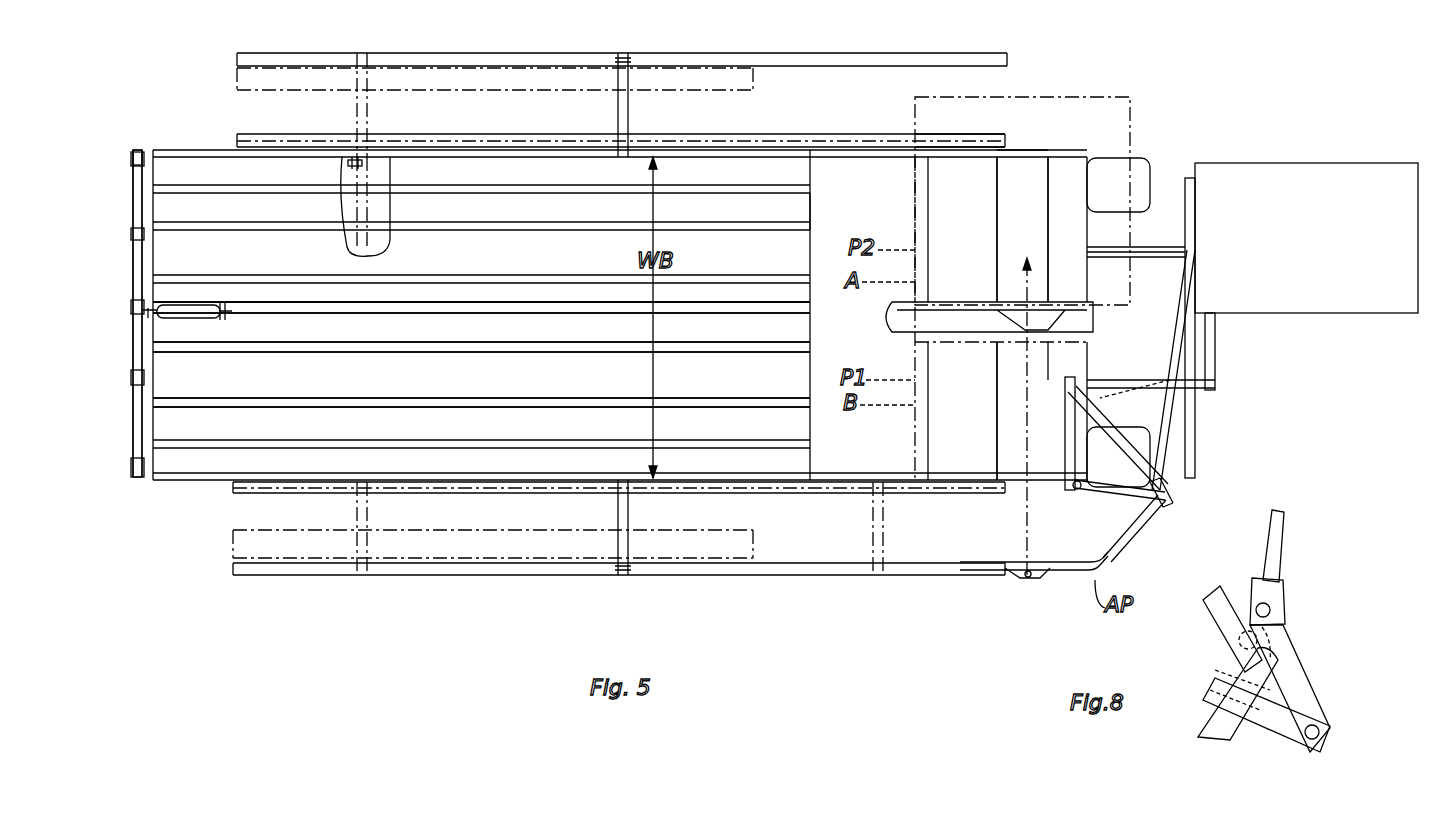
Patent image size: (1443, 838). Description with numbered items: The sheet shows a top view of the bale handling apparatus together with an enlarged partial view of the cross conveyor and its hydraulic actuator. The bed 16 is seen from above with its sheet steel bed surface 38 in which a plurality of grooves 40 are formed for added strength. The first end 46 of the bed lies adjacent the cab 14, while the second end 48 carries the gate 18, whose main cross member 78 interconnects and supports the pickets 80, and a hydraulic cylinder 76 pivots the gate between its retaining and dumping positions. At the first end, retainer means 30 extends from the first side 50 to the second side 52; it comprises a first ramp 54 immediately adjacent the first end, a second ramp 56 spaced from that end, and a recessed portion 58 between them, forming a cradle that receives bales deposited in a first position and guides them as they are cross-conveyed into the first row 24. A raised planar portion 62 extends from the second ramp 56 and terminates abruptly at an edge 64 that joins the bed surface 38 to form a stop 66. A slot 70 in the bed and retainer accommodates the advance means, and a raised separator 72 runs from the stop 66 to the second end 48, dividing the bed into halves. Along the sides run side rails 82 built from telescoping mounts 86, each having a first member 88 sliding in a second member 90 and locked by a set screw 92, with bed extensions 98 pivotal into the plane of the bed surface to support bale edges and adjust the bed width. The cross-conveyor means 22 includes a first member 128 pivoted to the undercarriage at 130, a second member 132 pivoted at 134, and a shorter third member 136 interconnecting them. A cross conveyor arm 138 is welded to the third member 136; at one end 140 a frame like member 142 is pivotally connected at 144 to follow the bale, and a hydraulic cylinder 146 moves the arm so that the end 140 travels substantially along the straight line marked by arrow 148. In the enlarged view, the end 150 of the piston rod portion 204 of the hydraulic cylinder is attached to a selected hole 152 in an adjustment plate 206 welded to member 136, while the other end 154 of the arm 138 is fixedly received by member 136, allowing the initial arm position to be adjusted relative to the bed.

In FIG. 5, the cab 14 is at (1330, 213).
In FIG. 5, the bed 16 is at (200, 488).
In FIG. 5, the gate 18 is at (132, 285).
In FIG. 5, the cross-conveyor means 22 is at (1115, 570).
In FIG. 5, the first row 24 is at (1055, 97).
In FIG. 5, the retainer means 30 is at (1015, 157).
In FIG. 5, the bed surface 38 is at (437, 376).
In FIG. 5, the grooves 40 is at (548, 283).
In FIG. 5, the first end 46 is at (1094, 170).
In FIG. 5, the second end 48 is at (133, 175).
In FIG. 5, the first side 50 is at (925, 495).
In FIG. 5, the second side 52 is at (938, 147).
In FIG. 5, the first ramp 54 is at (1088, 212).
In FIG. 5, the second ramp 56 is at (987, 212).
In FIG. 5, the recessed portion 58 is at (1047, 212).
In FIG. 5, the raised planar portion 62 is at (892, 210).
In FIG. 5, the edge 64 is at (810, 178).
In FIG. 5, the stop 66 is at (810, 208).
In FIG. 5, the slot 70 is at (893, 338).
In FIG. 5, the raised separator 72 is at (282, 302).
In FIG. 5, the hydraulic cylinder 76 is at (190, 302).
In FIG. 5, the main cross member 78 is at (133, 213).
In FIG. 5, the pickets 80 is at (118, 150).
In FIG. 5, the side rails 82 is at (640, 50).
In FIG. 5, the telescoping mount 86 is at (380, 175).
In FIG. 5, the first member 88 is at (365, 118).
In FIG. 5, the second member 90 is at (368, 218).
In FIG. 5, the set screw 92 is at (348, 163).
In FIG. 5, the bed extensions 98 is at (515, 95).
In FIG. 5, the first member 128 is at (1120, 505).
In FIG. 8, the first member 128 is at (1297, 740).
In FIG. 5, the pivot connection 130 is at (1077, 490).
In FIG. 5, the second member 132 is at (1085, 400).
In FIG. 5, the pivot connection 134 is at (1065, 400).
In FIG. 5, the third member 136 is at (1085, 462).
In FIG. 8, the third member 136 is at (1302, 690).
In FIG. 5, the cross conveyor arm 138 is at (1138, 528).
In FIG. 8, the cross conveyor arm 138 is at (1235, 740).
In FIG. 5, the end of arm 140 is at (1042, 578).
In FIG. 5, the frame like member 142 is at (960, 566).
In FIG. 5, the pivotal connection 144 is at (1025, 580).
In FIG. 5, the hydraulic cylinder 146 is at (1200, 380).
In FIG. 5, the arrow 148 is at (1012, 275).
In FIG. 8, the end of piston rod 150 is at (1270, 610).
In FIG. 8, the hole 152 is at (1262, 627).
In FIG. 8, the end of arm 154 is at (1273, 657).
In FIG. 8, the piston rod portion 204 is at (1283, 535).
In FIG. 8, the adjustment plate 206 is at (1287, 663).